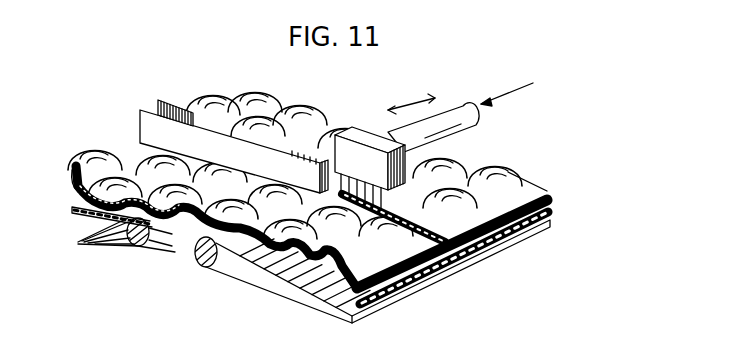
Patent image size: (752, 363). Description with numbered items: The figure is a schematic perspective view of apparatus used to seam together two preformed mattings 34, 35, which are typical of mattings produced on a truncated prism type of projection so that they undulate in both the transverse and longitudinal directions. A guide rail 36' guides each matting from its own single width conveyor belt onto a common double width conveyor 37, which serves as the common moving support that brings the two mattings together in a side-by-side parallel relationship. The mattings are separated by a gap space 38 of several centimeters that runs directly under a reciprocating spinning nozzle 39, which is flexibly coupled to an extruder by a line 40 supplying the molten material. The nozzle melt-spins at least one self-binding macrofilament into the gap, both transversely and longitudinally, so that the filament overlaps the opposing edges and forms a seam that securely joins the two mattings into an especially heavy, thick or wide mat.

The preformed matting 34 is at (100, 170).
The preformed matting 35 is at (265, 110).
The guide rail 36' is at (197, 139).
The common double width conveyor 37 is at (273, 273).
The gap space 38 is at (332, 182).
The reciprocating spinning nozzle 39 is at (368, 135).
The line 40 is at (448, 112).